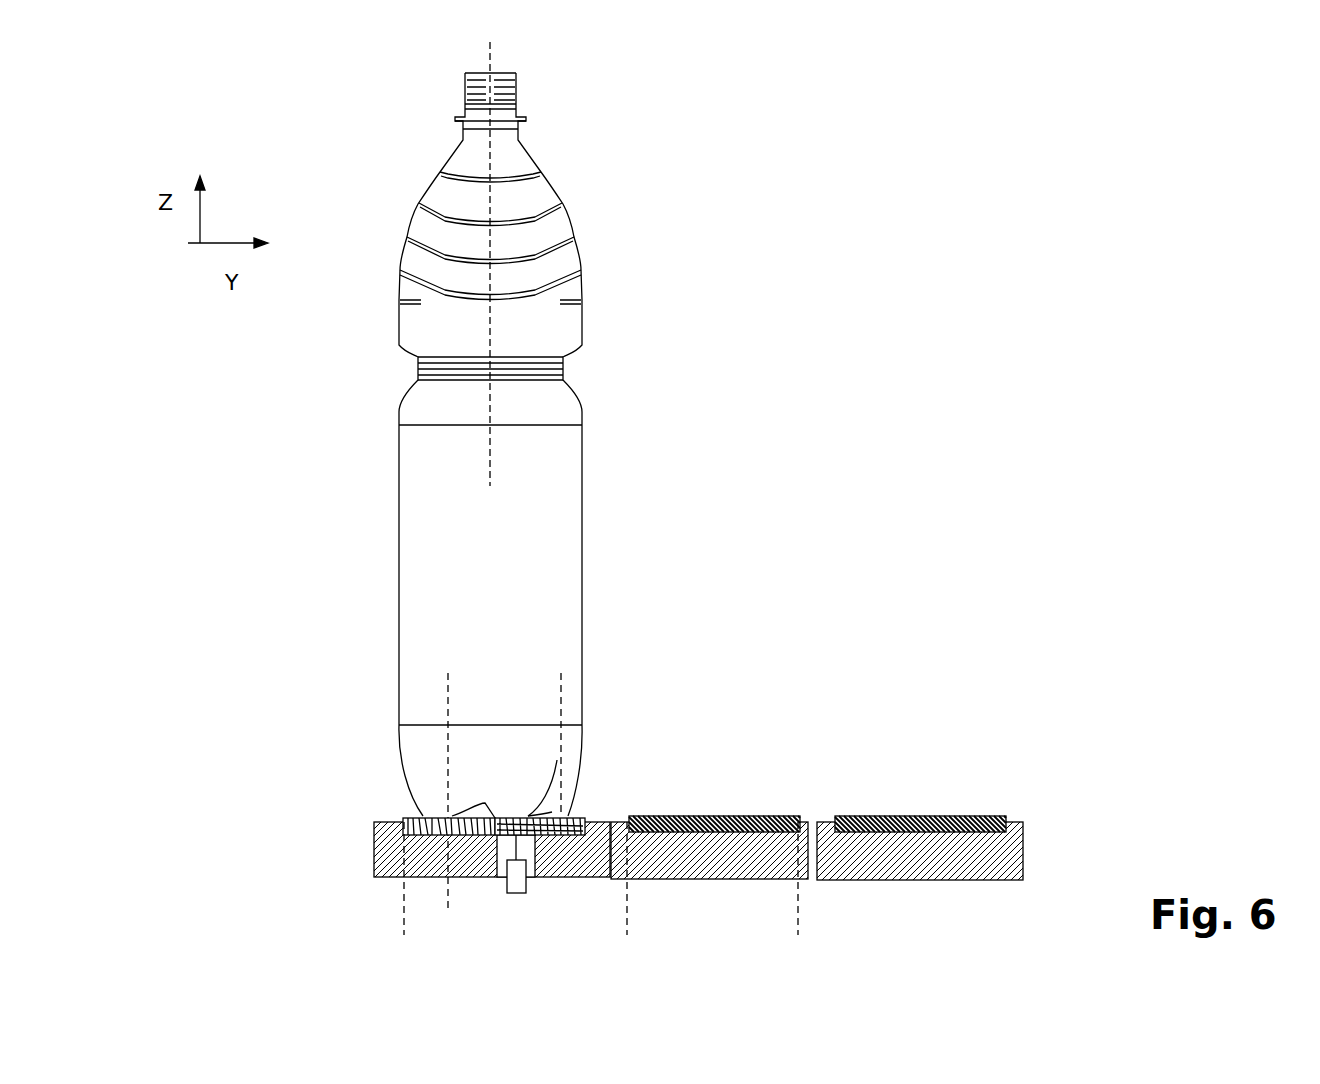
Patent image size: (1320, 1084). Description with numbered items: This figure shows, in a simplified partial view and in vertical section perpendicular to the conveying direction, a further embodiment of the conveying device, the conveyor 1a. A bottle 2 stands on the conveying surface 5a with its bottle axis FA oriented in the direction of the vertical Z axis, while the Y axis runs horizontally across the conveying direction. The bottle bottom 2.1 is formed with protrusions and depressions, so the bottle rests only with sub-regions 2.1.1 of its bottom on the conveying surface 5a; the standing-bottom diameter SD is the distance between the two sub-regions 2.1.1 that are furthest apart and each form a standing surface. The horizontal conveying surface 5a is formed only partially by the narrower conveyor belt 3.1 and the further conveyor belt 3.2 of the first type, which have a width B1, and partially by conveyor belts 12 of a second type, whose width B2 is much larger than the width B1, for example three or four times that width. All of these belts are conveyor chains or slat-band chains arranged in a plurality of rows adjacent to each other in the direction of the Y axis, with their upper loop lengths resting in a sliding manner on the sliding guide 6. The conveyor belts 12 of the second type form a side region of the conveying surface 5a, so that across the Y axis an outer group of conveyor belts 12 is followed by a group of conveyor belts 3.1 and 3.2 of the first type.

The conveyor 1a is at (843, 530).
The bottle 2 is at (558, 508).
The bottle bottom 2.1 is at (414, 788).
The sub-region of the bottle bottom 2.1.1 is at (546, 810).
The conveyor belt 3.1 is at (405, 818).
The further conveyor belt 3.2 is at (585, 817).
The conveying surface 5a is at (976, 789).
The sliding guide 6 is at (380, 850).
The conveyor belt of a second type 12 is at (735, 815).
The bottle axis FA is at (492, 458).
The standing-bottom diameter SD is at (555, 696).
The width of the first-type conveyor belts B1 is at (493, 922).
The width of the second-type conveyor belts B2 is at (789, 922).